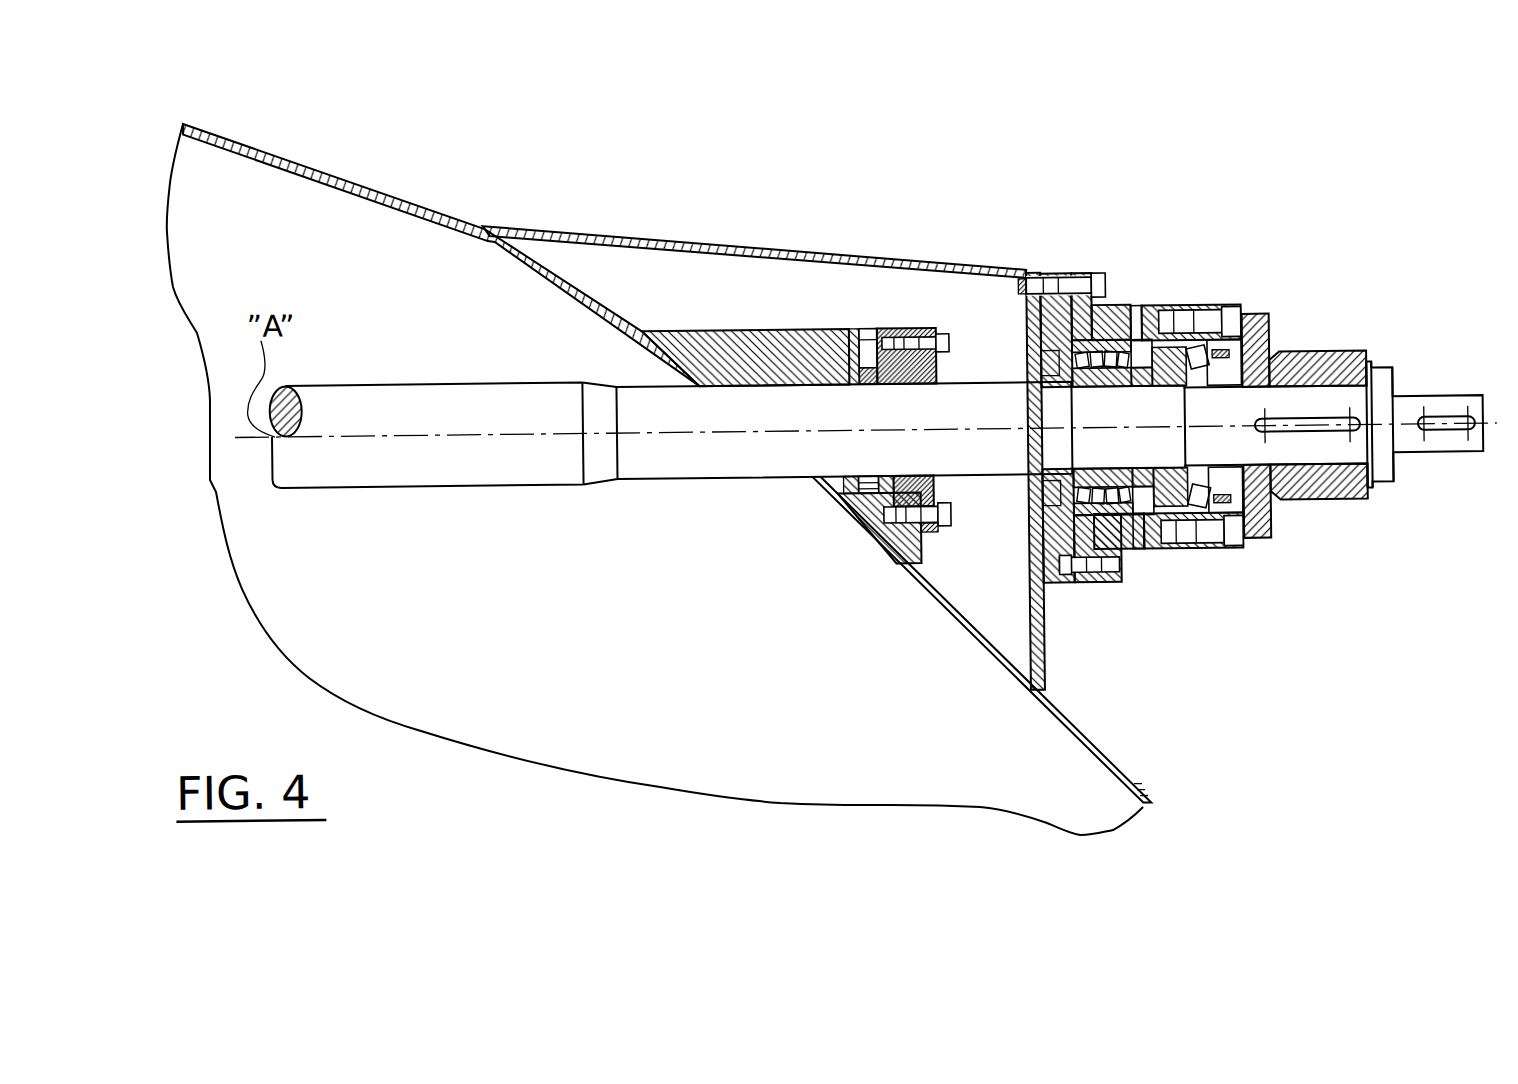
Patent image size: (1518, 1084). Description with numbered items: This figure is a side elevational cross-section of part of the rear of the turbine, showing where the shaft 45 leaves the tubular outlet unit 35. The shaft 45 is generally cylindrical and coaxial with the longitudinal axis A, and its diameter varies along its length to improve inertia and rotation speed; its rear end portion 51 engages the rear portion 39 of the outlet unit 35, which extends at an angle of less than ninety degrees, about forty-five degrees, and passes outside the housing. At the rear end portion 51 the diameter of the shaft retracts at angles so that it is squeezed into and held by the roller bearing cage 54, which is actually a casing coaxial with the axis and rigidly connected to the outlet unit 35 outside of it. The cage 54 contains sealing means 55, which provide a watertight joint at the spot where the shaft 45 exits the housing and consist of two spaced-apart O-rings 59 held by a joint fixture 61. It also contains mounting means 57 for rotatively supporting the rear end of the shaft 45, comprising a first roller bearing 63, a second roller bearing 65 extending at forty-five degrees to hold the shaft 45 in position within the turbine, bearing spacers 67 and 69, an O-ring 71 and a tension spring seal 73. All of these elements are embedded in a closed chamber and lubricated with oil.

The tubular outlet unit 35 is at (312, 148).
The rear portion 39 is at (1122, 783).
The shaft 45 is at (455, 497).
The rear end portion 51 is at (676, 484).
The roller bearing cage 54 is at (1188, 386).
The sealing means 55 is at (883, 325).
The mounting means 57 is at (1237, 303).
The O-rings 59 is at (870, 336).
The joint fixture 61 is at (947, 381).
The first roller bearing 63 is at (1094, 315).
The second roller bearing 65 is at (1168, 361).
The bearing spacer 67 is at (1140, 491).
The bearing spacer 69 is at (1273, 366).
The O-ring 71 is at (1046, 499).
The tension spring seal 73 is at (1256, 326).